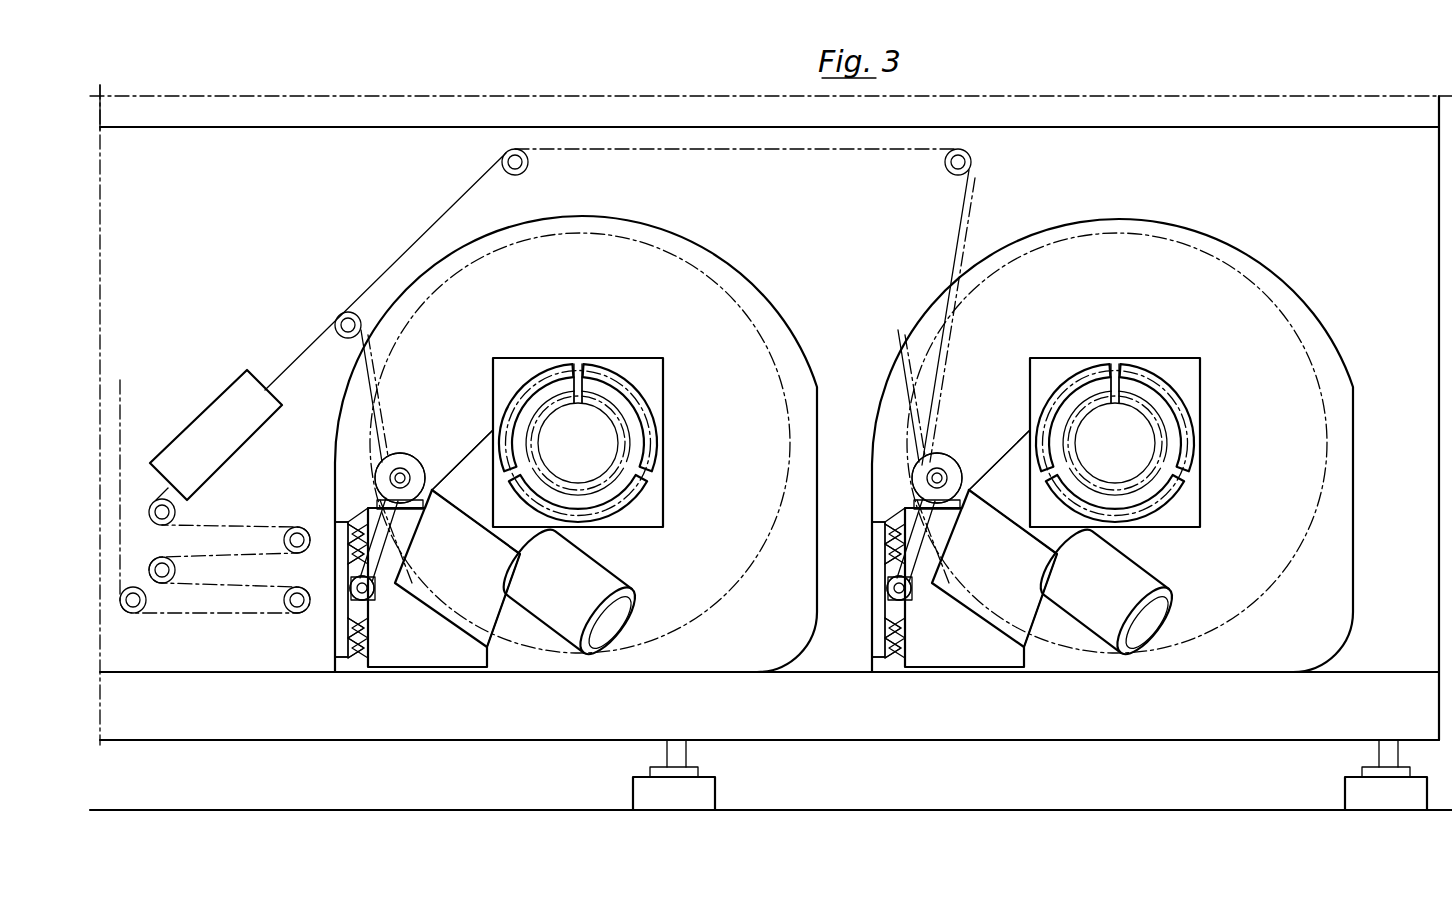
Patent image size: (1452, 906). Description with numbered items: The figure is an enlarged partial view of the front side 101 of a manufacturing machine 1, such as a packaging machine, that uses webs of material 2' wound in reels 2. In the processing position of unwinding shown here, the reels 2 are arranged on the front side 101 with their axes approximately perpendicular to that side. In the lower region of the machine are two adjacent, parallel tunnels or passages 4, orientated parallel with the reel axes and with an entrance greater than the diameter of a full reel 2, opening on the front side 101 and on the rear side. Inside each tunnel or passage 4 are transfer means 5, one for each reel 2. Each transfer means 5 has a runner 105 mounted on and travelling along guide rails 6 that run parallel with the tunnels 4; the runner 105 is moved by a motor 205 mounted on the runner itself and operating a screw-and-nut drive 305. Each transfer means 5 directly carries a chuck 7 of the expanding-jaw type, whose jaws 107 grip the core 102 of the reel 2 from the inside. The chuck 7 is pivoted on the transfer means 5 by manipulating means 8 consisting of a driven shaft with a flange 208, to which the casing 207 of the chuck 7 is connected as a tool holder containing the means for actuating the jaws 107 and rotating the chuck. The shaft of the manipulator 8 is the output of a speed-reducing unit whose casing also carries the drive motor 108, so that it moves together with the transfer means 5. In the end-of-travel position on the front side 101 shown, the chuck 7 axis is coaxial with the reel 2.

The manufacturing machine 1 is at (1386, 112).
The front side 101 is at (1253, 148).
The reel 2 is at (844, 444).
The web of material 2' is at (620, 307).
The tunnel or passage 4 is at (766, 650).
The transfer means 5 is at (428, 686).
The guide rails 6 is at (350, 522).
The chuck 7 is at (678, 438).
The manipulating means 8 is at (490, 602).
The core 102 is at (603, 400).
The runner 105 is at (364, 660).
The expanding jaws 107 is at (645, 397).
The drive motor 108 is at (605, 590).
The motor 205 is at (401, 458).
The casing 207 is at (514, 366).
The flange 208 is at (484, 448).
The screw-and-nut drive 305 is at (385, 602).